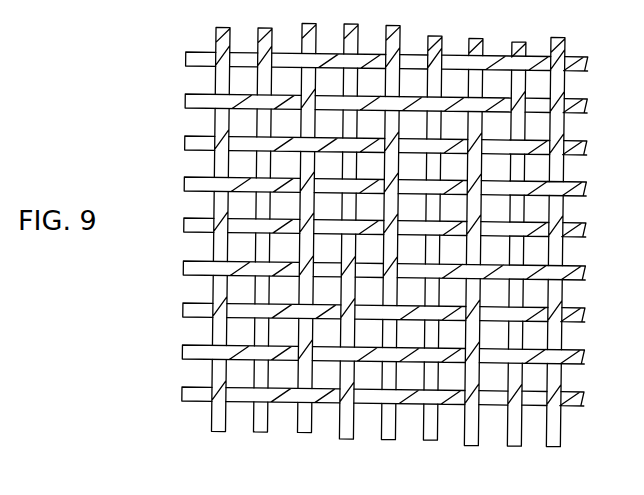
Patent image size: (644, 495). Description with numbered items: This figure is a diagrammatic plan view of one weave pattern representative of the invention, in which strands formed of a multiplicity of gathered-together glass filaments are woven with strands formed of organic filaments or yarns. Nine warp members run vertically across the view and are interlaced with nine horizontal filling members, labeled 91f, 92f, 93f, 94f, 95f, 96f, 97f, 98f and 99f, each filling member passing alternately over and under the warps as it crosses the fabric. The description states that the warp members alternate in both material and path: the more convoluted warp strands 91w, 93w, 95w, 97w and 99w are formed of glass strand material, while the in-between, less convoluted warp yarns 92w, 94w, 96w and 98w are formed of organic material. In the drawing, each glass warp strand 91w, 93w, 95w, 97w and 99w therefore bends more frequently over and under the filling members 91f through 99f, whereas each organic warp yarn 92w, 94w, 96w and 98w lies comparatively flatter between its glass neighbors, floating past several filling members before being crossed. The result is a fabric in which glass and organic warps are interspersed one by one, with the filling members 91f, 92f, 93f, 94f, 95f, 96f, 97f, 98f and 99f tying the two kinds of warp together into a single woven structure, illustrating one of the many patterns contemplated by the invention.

The warp strand 91w is at (223, 431).
The warp yarn 92w is at (265, 431).
The warp strand 93w is at (309, 431).
The warp yarn 94w is at (351, 437).
The warp strand 95w is at (393, 437).
The warp yarn 96w is at (435, 437).
The warp strand 97w is at (476, 442).
The warp yarn 98w is at (519, 442).
The warp strand 99w is at (558, 442).
The filling yarn 91f is at (186, 61).
The filling yarn 92f is at (186, 103).
The filling yarn 93f is at (186, 145).
The filling yarn 94f is at (186, 186).
The filling yarn 95f is at (186, 227).
The filling yarn 96f is at (186, 270).
The filling yarn 97f is at (186, 312).
The filling yarn 98f is at (186, 354).
The filling yarn 99f is at (186, 396).